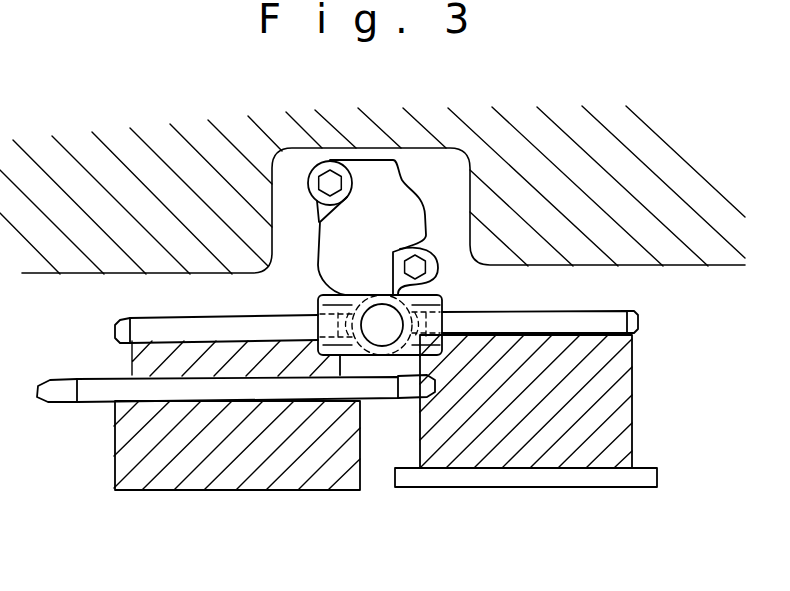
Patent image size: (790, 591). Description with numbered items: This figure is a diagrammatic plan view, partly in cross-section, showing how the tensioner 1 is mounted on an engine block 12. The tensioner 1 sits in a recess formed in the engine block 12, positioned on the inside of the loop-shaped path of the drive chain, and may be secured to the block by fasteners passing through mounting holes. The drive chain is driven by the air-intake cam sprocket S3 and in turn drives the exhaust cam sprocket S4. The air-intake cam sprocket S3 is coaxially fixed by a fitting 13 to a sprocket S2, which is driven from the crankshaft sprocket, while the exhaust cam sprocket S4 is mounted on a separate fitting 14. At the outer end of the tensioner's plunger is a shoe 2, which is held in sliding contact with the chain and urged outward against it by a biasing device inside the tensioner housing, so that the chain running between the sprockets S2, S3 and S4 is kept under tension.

The tensioner 1 is at (382, 218).
The shoe 2 is at (445, 306).
The engine block 12 is at (583, 188).
The fitting 13 is at (252, 467).
The fitting 14 is at (605, 385).
The sprocket S2 is at (92, 397).
The air-intake cam sprocket S3 is at (157, 325).
The exhaust cam sprocket S4 is at (603, 311).